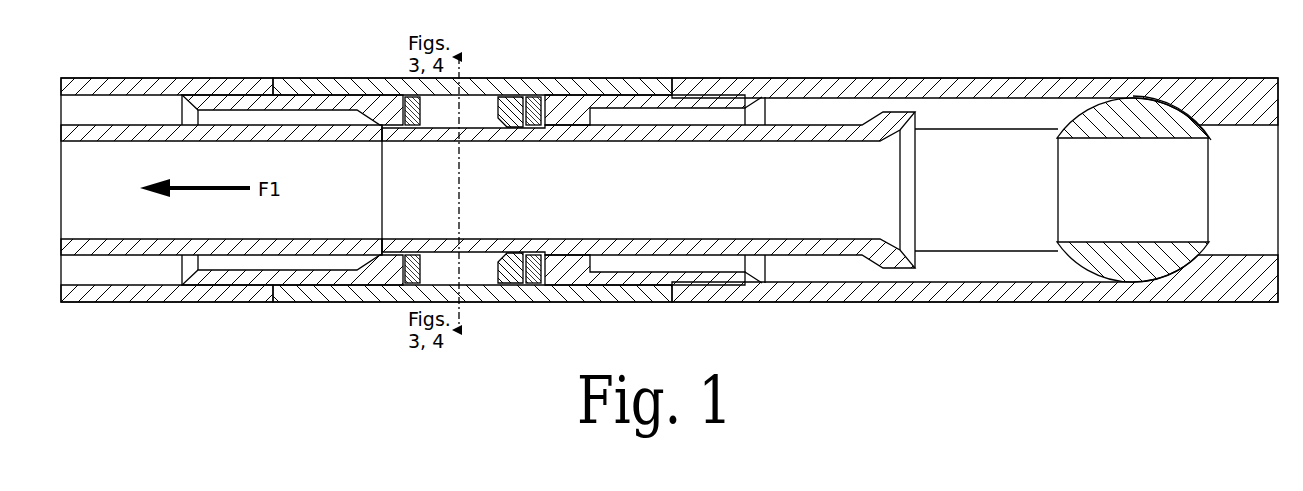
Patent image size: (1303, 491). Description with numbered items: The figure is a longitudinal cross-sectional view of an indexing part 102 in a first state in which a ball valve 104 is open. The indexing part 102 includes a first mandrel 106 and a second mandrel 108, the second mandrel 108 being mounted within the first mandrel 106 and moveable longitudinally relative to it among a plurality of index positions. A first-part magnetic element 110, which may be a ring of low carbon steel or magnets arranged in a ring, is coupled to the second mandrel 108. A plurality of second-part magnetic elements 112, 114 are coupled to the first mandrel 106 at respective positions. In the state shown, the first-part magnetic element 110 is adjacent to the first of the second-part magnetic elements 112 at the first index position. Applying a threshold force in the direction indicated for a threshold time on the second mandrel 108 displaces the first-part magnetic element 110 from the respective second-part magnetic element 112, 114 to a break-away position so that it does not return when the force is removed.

The indexing part 102 is at (500, 38).
The ball valve 104 is at (1172, 134).
The first mandrel 106 is at (165, 78).
The second mandrel 108 is at (164, 142).
The first-part magnetic element 110 is at (508, 130).
The second-part magnetic element 112 is at (413, 96).
The second-part magnetic element 114 is at (533, 96).